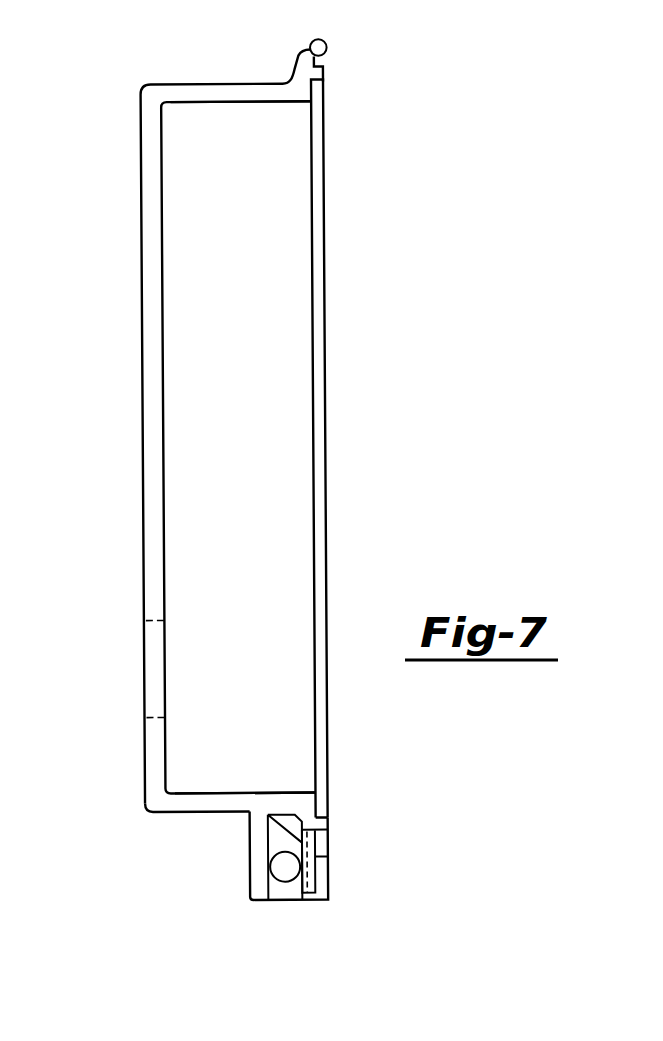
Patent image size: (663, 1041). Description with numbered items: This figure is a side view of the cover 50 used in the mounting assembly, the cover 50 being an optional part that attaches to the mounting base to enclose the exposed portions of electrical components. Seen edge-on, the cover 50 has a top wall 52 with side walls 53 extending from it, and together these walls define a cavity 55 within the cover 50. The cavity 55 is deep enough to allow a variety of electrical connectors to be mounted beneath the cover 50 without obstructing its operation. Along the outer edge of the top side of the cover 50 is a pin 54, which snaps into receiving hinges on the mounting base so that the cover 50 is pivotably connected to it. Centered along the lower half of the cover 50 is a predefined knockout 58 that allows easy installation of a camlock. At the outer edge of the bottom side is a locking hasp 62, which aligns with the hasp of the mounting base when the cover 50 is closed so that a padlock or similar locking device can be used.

The cover 50 is at (123, 88).
The top wall 52 is at (162, 277).
The side walls 53 is at (207, 103).
The pin 54 is at (326, 47).
The cavity 55 is at (250, 463).
The predefined knockout 58 is at (143, 652).
The locking hasp 62 is at (249, 842).